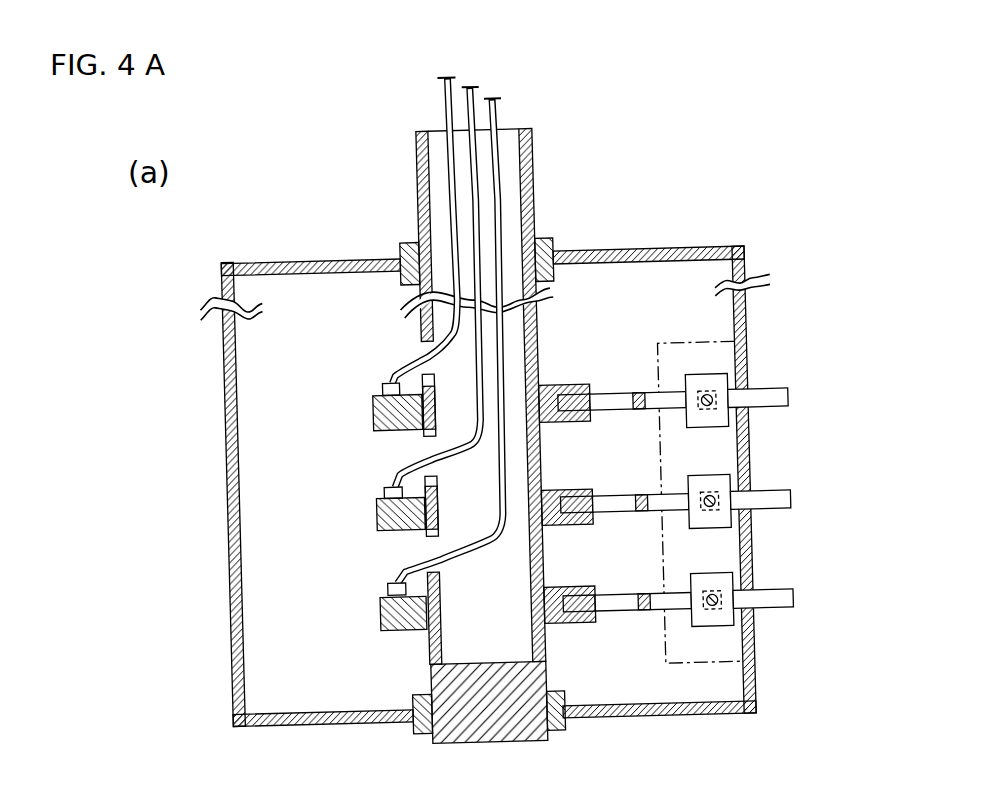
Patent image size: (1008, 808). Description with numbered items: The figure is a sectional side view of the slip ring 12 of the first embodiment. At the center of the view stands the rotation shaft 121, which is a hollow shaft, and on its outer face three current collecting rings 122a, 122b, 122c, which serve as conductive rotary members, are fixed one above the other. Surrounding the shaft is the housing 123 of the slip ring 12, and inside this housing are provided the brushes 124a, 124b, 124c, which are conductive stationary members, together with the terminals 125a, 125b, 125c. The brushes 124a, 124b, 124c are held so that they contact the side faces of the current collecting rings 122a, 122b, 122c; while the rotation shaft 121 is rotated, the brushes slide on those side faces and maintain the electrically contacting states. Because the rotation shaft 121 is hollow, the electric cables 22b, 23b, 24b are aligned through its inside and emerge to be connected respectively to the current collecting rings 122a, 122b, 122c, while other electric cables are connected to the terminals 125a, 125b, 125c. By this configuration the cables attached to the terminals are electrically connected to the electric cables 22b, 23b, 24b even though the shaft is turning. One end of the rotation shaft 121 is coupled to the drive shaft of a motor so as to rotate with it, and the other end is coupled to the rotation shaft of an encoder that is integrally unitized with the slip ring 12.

The slip ring 12 is at (326, 204).
The rotation shaft 121 is at (545, 212).
The current collecting ring 122a is at (373, 413).
The current collecting ring 122b is at (377, 517).
The current collecting ring 122c is at (378, 618).
The housing 123 is at (682, 248).
The brush 124a is at (668, 397).
The brush 124b is at (668, 503).
The brush 124c is at (672, 598).
The terminal 125a is at (760, 393).
The terminal 125b is at (772, 508).
The terminal 125c is at (778, 603).
The electric cable 22b is at (453, 95).
The electric cable 23b is at (477, 100).
The electric cable 24b is at (500, 118).